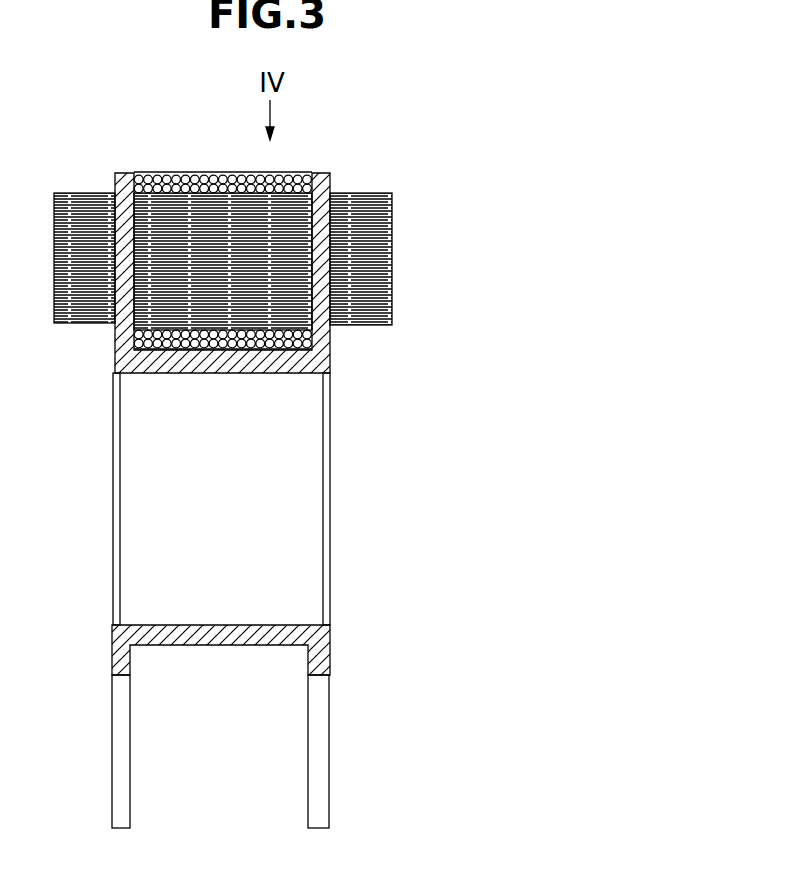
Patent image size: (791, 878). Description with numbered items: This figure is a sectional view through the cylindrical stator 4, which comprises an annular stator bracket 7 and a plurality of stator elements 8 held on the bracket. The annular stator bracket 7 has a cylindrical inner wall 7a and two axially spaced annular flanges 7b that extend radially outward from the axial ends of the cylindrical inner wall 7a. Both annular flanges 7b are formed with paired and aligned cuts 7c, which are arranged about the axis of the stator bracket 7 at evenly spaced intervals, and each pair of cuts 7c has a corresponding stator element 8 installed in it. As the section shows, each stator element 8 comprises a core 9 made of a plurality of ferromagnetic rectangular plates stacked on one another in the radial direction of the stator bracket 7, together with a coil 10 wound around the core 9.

The cylindrical stator 4 is at (411, 116).
The annular stator bracket 7 is at (343, 656).
The cylindrical inner wall 7a is at (250, 626).
The annular flanges 7b is at (121, 172).
The paired and aligned cuts 7c is at (322, 752).
The stator element 8 is at (407, 292).
The core 9 is at (392, 247).
The coil 10 is at (208, 175).